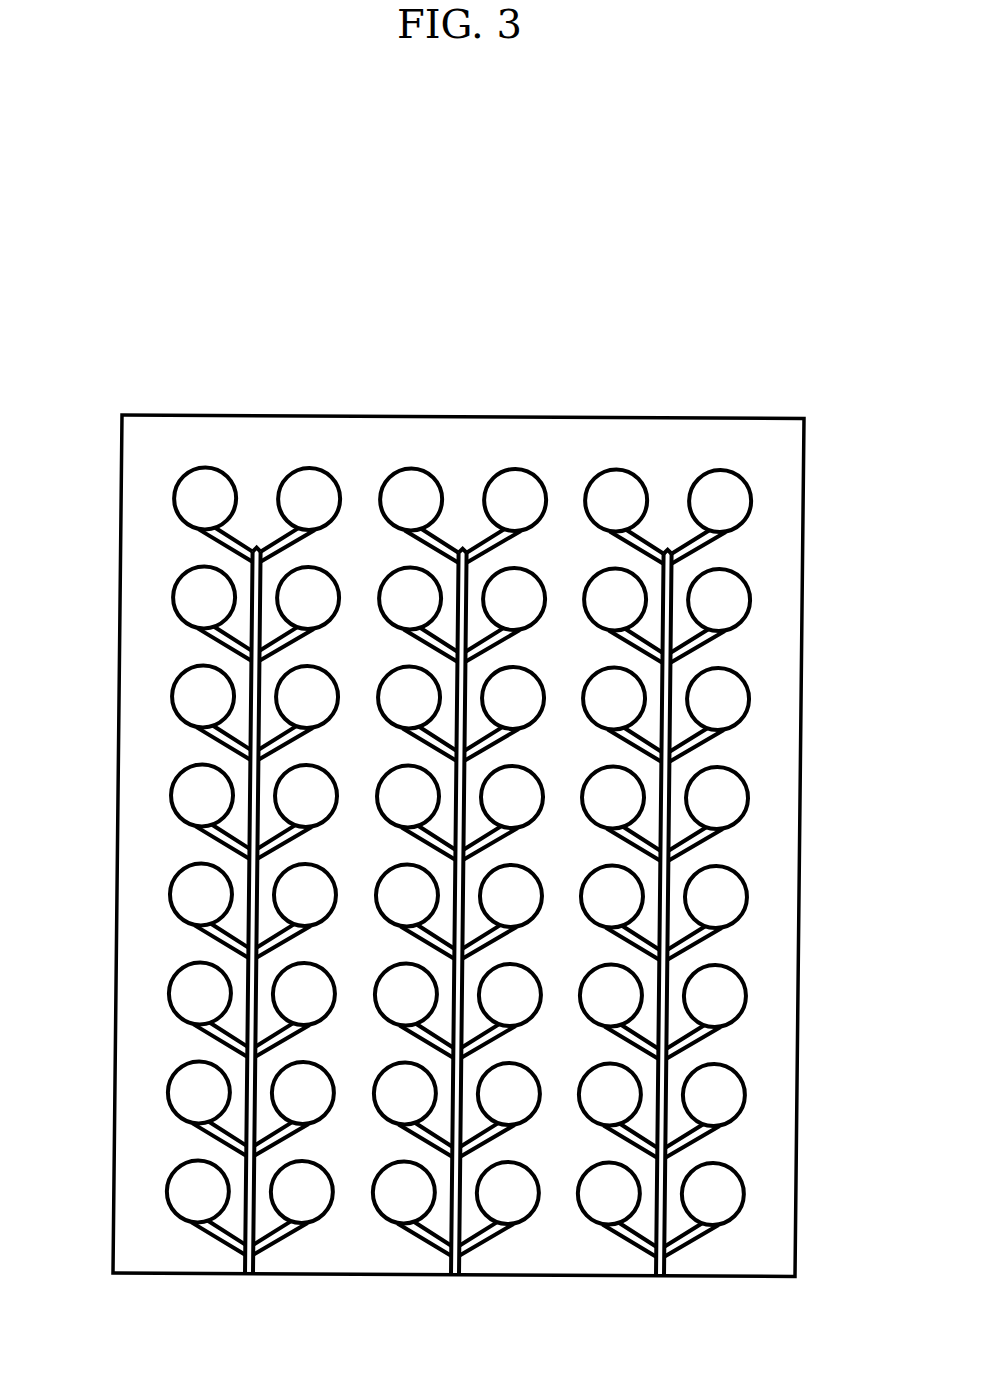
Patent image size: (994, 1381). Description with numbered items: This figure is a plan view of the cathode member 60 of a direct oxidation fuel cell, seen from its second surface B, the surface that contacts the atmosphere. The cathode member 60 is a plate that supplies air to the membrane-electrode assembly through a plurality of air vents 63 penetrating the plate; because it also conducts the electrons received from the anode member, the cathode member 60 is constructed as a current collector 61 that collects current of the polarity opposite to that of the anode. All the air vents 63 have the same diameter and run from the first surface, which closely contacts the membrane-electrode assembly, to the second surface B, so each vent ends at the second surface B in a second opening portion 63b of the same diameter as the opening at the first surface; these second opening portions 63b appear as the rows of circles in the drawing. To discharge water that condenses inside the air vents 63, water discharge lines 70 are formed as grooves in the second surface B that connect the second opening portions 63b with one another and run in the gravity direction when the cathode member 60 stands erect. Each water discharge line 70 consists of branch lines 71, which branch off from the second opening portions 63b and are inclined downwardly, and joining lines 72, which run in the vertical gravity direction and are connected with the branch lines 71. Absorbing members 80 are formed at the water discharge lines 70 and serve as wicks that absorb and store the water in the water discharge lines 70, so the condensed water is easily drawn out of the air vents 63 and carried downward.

The cathode member 60 is at (467, 273).
The current collector 61 is at (347, 1273).
The air vents 63 is at (757, 675).
The second opening portion 63b is at (750, 592).
The water discharge lines 70 is at (707, 752).
The branch lines 71 is at (703, 869).
The joining lines 72 is at (673, 912).
The absorbing members 80 is at (707, 1035).
The second surface B is at (313, 552).